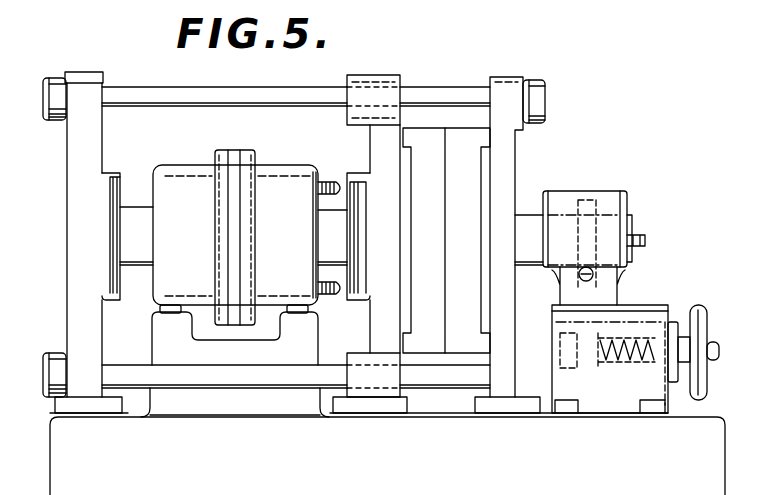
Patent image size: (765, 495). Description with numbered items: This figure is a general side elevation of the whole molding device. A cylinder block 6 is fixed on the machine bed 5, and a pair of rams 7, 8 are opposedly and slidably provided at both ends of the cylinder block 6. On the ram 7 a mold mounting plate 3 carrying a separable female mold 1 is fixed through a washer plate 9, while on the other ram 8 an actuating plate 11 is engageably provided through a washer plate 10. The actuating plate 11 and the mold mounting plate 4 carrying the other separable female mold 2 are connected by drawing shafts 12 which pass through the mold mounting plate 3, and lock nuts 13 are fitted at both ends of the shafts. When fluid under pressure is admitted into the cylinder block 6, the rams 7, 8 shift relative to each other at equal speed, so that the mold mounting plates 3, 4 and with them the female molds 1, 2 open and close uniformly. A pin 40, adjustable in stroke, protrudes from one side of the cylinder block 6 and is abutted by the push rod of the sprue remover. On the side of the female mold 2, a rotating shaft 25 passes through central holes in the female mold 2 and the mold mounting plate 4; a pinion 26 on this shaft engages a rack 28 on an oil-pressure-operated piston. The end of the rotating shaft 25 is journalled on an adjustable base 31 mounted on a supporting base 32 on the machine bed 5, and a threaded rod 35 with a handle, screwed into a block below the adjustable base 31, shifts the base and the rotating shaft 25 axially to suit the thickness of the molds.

The separable female mold 1 is at (423, 148).
The separable female mold 2 is at (462, 150).
The mold mounting plate 3 is at (382, 120).
The mold mounting plate 4 is at (508, 102).
The machine bed 5 is at (58, 433).
The cylinder block 6 is at (177, 177).
The ram 7 is at (338, 290).
The ram 8 is at (138, 250).
The washer plate 9 is at (362, 177).
The washer plate 10 is at (109, 187).
The actuating plate 11 is at (80, 237).
The drawing shafts 12 is at (146, 96).
The lock nuts 13 is at (53, 122).
The rotating shaft 25 is at (530, 220).
The pinion 26 is at (597, 213).
The rack 28 is at (595, 277).
The adjustable base 31 is at (567, 203).
The supporting base 32 is at (650, 393).
The threaded rod with handle 35 is at (682, 330).
The pin 40 is at (327, 183).